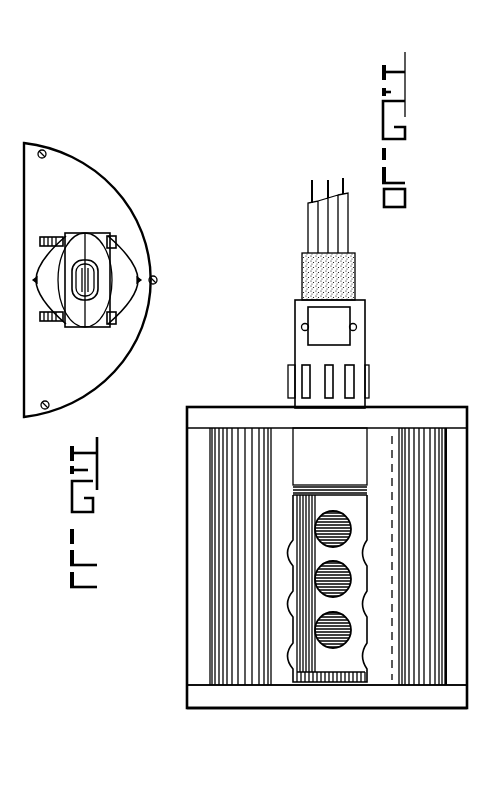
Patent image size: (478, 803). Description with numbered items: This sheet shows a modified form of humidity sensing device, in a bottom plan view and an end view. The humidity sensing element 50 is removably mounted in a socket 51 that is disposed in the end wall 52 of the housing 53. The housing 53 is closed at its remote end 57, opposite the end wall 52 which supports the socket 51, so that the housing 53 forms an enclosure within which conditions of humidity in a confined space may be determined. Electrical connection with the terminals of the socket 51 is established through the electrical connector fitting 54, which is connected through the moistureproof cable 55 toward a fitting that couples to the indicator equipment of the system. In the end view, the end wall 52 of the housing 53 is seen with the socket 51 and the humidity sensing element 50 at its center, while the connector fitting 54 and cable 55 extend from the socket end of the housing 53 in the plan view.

In FIG. 10, the humidity sensing element 50 is at (359, 513).
In FIG. 10, the socket 51 is at (315, 448).
In FIG. 10, the end wall 52 is at (412, 418).
In FIG. 11, the end wall 52 is at (156, 246).
In FIG. 10, the housing 53 is at (191, 547).
In FIG. 11, the housing 53 is at (140, 186).
In FIG. 10, the electrical connector fitting 54 is at (362, 354).
In FIG. 11, the electrical connector fitting 54 is at (95, 322).
In FIG. 10, the moistureproof cable 55 is at (318, 228).
In FIG. 11, the moistureproof cable 55 is at (83, 262).
In FIG. 10, the remote end 57 is at (415, 695).